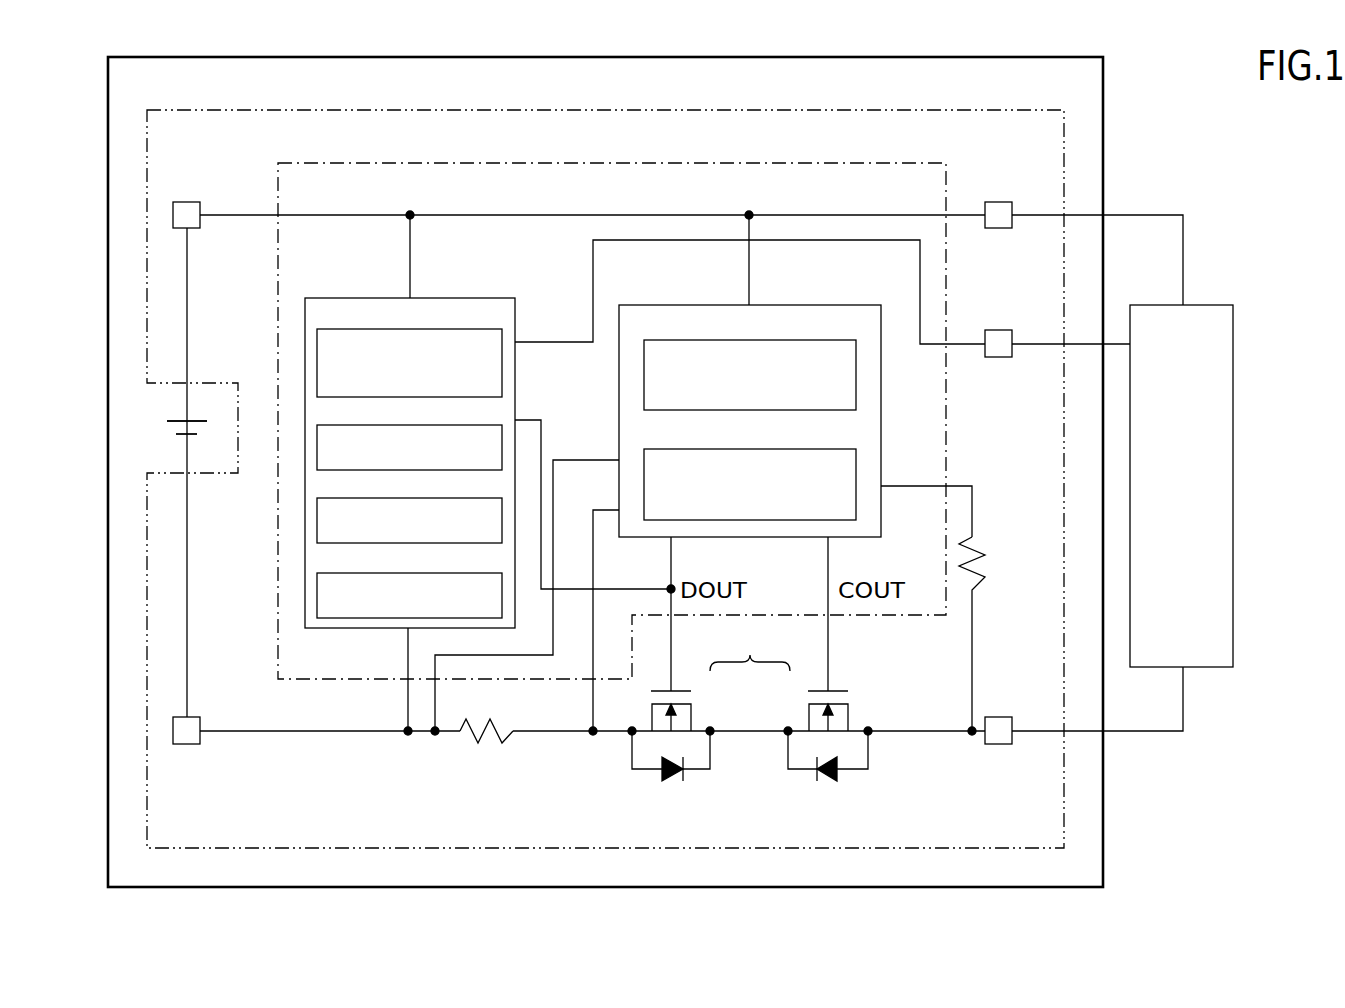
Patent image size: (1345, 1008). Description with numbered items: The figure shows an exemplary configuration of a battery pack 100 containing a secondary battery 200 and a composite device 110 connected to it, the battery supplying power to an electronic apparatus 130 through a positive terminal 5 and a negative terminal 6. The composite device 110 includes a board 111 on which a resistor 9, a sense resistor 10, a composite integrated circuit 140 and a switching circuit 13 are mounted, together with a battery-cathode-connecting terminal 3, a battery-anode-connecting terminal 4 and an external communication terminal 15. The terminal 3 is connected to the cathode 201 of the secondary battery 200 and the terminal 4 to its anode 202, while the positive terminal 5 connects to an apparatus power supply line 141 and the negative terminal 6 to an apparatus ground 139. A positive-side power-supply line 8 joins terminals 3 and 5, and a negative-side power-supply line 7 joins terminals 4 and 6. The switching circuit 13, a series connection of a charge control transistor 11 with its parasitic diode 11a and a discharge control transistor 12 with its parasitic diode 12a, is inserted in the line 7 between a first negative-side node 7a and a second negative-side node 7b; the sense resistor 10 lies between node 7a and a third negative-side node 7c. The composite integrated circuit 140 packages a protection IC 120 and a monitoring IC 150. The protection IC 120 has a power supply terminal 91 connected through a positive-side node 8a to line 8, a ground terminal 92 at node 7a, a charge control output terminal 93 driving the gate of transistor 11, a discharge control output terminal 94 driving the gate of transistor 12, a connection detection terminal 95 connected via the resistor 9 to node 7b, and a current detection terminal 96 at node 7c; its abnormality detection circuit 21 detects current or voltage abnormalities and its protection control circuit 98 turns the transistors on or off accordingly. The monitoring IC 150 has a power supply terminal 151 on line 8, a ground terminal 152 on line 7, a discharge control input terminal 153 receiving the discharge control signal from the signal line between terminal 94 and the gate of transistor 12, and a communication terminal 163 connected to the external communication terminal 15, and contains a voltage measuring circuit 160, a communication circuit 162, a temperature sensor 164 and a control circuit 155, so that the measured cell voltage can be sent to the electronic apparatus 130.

The battery pack 100 is at (606, 57).
The composite device 110 is at (606, 110).
The board 111 is at (854, 142).
The composite integrated circuit 140 is at (606, 163).
The battery-cathode-connecting terminal 3 is at (196, 202).
The battery-anode-connecting terminal 4 is at (200, 744).
The positive terminal 5 is at (1000, 202).
The negative terminal 6 is at (1000, 744).
The external communication terminal 15 is at (1000, 330).
The positive-side power-supply line 8 is at (580, 215).
The positive-side node 8a is at (749, 214).
The apparatus power supply line 141 is at (1145, 215).
The apparatus ground 139 is at (1145, 732).
The electronic apparatus 130 is at (1210, 305).
The secondary battery 200 is at (172, 429).
The cathode 201 is at (182, 420).
The anode 202 is at (182, 436).
The power supply terminal 151 is at (406, 298).
The monitoring IC 150 is at (410, 448).
The voltage measuring circuit 160 is at (430, 329).
The temperature sensor 164 is at (430, 425).
The communication circuit 162 is at (430, 498).
The control circuit 155 is at (430, 573).
The ground terminal 152 is at (405, 630).
The communication terminal 163 is at (517, 342).
The discharge control input terminal 153 is at (517, 420).
The ground terminal 92 is at (617, 458).
The current detection terminal 96 is at (617, 508).
The power supply terminal 91 is at (747, 302).
The protection IC 120 is at (750, 405).
The abnormality detection circuit 21 is at (765, 340).
The protection control circuit 98 is at (765, 449).
The connection detection terminal 95 is at (884, 484).
The resistor 9 is at (986, 556).
The second negative-side node 7b is at (970, 736).
The discharge control output terminal 94 is at (666, 544).
The charge control output terminal 93 is at (823, 544).
The switching circuit 13 is at (750, 649).
The discharge control transistor 12 is at (692, 712).
The parasitic diode 12a is at (676, 786).
The charge control transistor 11 is at (809, 712).
The parasitic diode 11a is at (822, 786).
The negative-side power-supply line 7 is at (411, 737).
The first negative-side node 7a is at (438, 737).
The third negative-side node 7c is at (590, 737).
The sense resistor 10 is at (505, 726).